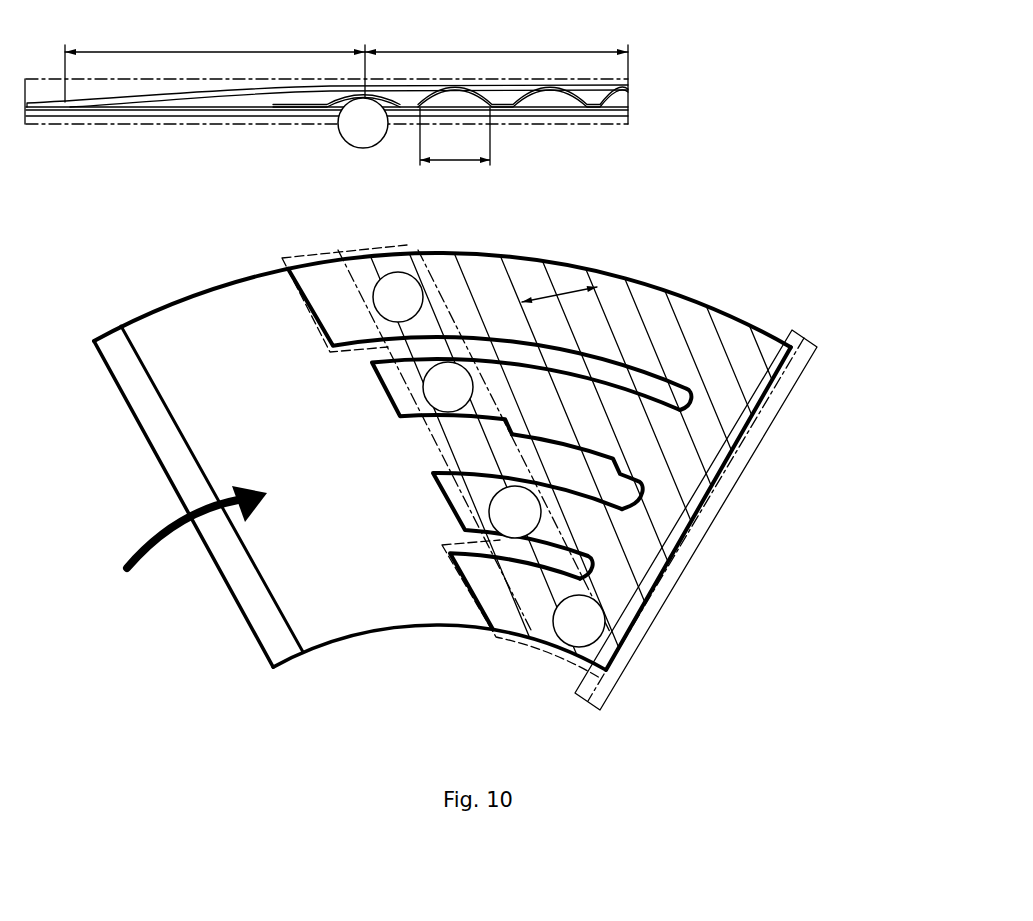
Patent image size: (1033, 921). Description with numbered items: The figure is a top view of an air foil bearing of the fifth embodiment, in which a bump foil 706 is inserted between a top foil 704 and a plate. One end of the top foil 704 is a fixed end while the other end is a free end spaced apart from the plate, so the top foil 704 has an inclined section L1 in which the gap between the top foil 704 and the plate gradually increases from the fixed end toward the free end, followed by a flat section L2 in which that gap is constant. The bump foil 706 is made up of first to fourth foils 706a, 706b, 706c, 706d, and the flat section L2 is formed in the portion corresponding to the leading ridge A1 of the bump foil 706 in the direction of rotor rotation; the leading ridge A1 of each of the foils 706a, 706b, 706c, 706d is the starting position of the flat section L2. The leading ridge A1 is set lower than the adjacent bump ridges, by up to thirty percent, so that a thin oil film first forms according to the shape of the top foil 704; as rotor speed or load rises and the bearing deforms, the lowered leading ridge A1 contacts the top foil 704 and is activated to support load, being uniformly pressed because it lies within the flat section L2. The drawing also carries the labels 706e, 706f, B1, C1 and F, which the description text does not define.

The top foil 704 is at (176, 289).
The bump foil 706 is at (870, 268).
The first foil 706a is at (600, 330).
The second foil 706b is at (595, 410).
The third foil 706c is at (582, 517).
The fourth foil 706d is at (650, 600).
The tab end portion 706e is at (522, 356).
The bent (stepped) portion 706f is at (570, 452).
The leading ridge A1 is at (471, 372).
The region B1 (tab edge offset) B1 is at (472, 593).
The pitch C1 is at (558, 285).
The region F is at (658, 613).
The inclined section L1 is at (215, 38).
The flat section L2 is at (496, 38).